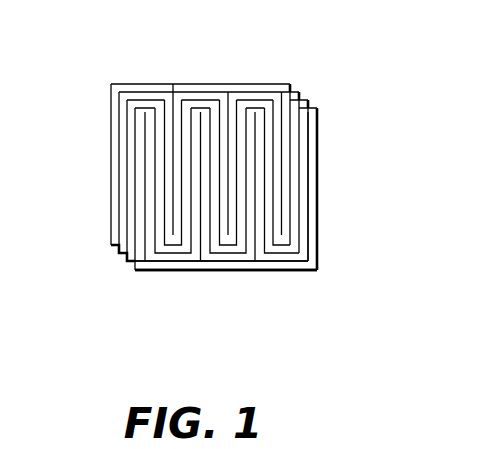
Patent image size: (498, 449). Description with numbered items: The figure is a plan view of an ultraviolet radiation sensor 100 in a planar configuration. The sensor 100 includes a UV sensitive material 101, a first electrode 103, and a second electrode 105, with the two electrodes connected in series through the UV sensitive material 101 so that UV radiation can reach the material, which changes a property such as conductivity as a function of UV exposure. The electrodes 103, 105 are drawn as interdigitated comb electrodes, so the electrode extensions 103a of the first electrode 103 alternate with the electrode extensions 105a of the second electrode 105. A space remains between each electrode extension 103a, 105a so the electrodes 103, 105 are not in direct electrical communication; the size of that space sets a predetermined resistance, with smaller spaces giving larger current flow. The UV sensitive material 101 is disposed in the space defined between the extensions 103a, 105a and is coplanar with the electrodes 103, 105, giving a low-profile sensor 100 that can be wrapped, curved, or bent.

The ultraviolet radiation sensor 100 is at (237, 197).
The UV sensitive material 101 is at (122, 256).
The first electrode 103 is at (164, 124).
The electrode extension 103a is at (173, 175).
The second electrode 105 is at (269, 246).
The electrode extension 105a is at (257, 197).